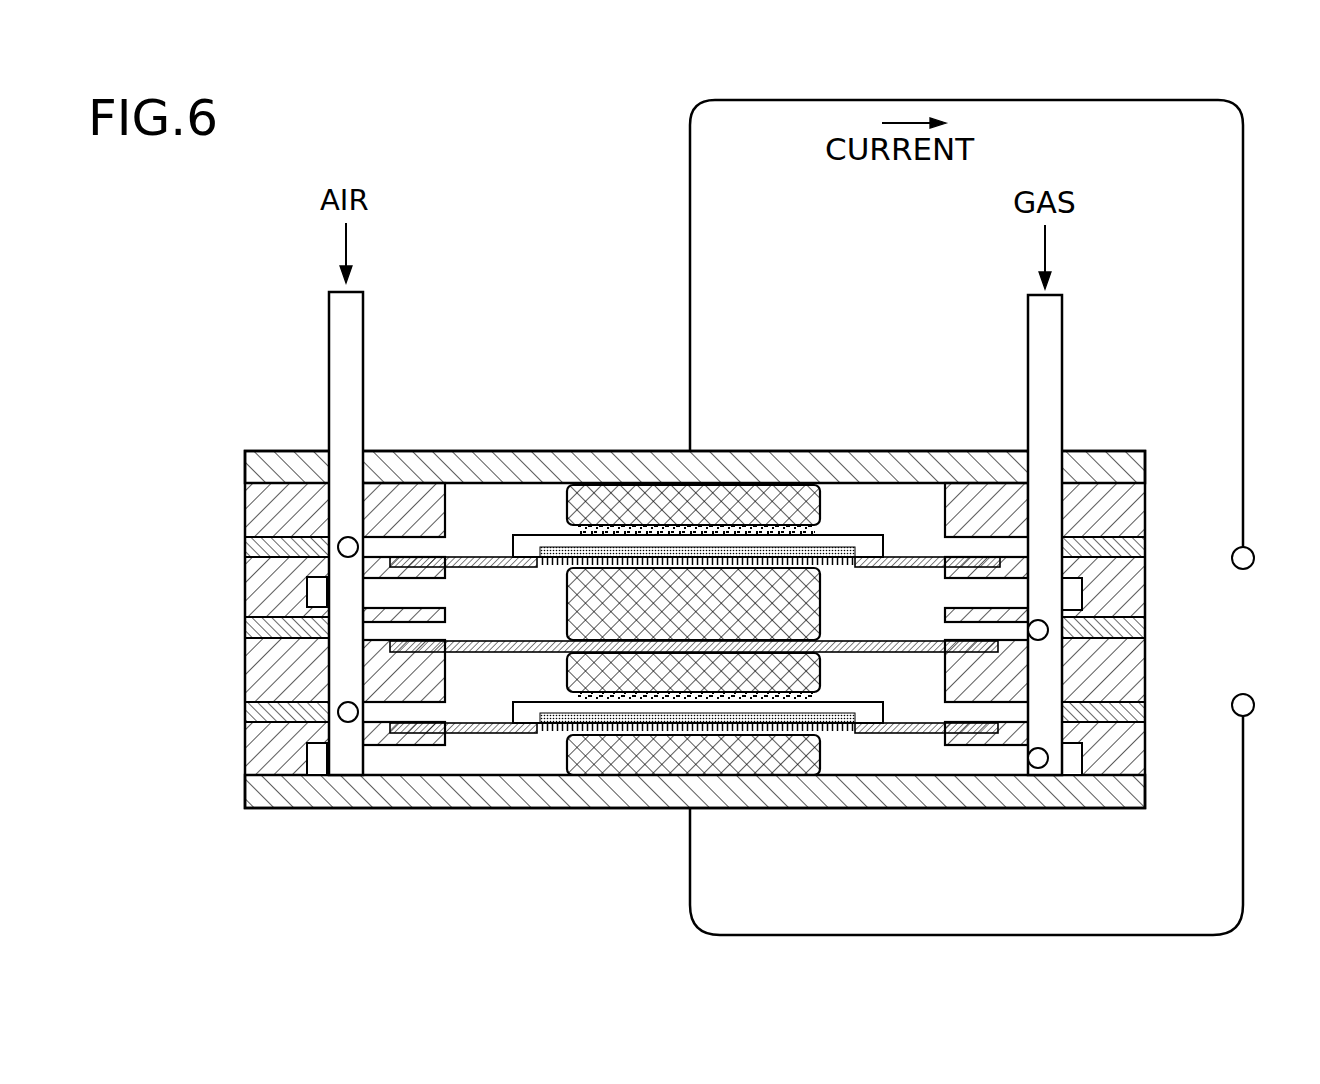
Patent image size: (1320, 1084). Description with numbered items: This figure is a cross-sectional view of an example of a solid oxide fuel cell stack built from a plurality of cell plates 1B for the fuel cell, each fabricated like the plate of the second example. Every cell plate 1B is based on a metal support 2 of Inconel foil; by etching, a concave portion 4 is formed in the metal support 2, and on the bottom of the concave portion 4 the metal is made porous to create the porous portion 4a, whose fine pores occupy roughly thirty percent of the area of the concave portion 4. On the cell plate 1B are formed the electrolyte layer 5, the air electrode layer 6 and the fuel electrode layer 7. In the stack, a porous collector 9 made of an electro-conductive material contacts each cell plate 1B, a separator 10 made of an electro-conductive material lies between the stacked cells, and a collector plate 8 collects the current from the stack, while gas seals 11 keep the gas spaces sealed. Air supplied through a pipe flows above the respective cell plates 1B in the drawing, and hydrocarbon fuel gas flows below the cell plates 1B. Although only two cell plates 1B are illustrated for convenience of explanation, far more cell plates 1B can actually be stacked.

The cell plate for the fuel cell 1B is at (506, 540).
The metal support 2 is at (915, 558).
The concave portion 4 is at (731, 664).
The porous portion 4a is at (835, 567).
The electrolyte layer 5 is at (826, 535).
The air electrode layer 6 is at (578, 529).
The fuel electrode layer 7 is at (856, 552).
The collector plate 8 is at (1097, 468).
The porous collector 9 is at (567, 612).
The separator 10 is at (920, 640).
The gas seal 11 is at (245, 547).